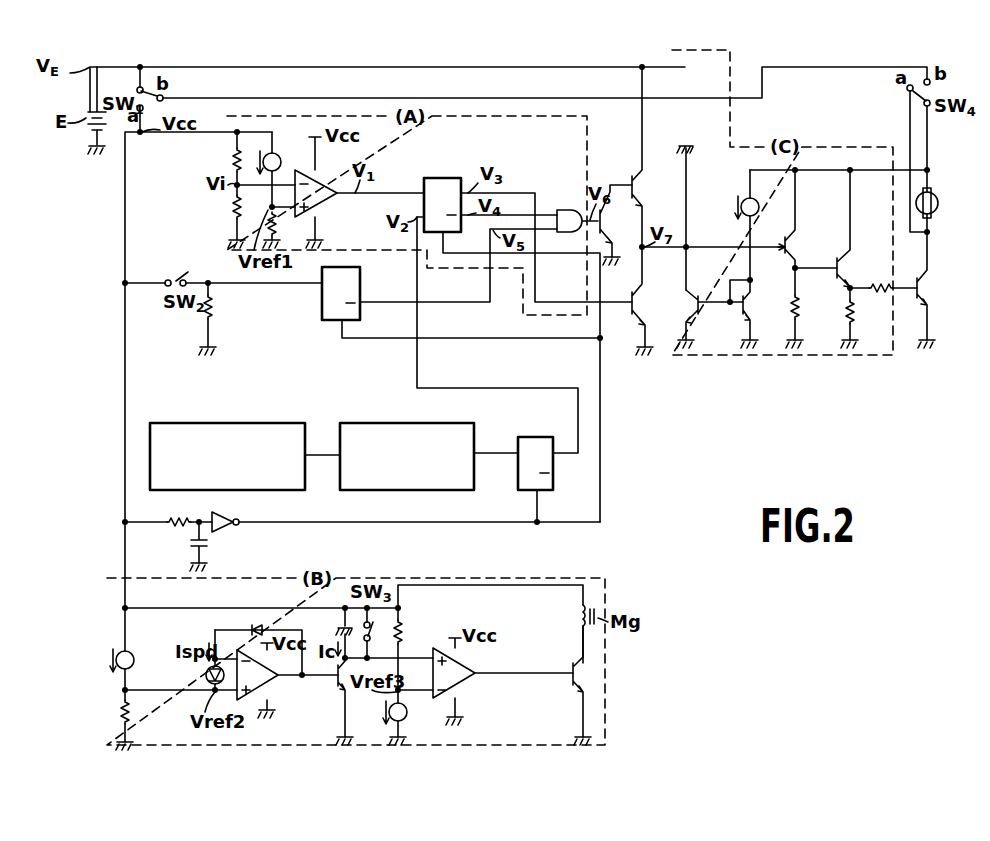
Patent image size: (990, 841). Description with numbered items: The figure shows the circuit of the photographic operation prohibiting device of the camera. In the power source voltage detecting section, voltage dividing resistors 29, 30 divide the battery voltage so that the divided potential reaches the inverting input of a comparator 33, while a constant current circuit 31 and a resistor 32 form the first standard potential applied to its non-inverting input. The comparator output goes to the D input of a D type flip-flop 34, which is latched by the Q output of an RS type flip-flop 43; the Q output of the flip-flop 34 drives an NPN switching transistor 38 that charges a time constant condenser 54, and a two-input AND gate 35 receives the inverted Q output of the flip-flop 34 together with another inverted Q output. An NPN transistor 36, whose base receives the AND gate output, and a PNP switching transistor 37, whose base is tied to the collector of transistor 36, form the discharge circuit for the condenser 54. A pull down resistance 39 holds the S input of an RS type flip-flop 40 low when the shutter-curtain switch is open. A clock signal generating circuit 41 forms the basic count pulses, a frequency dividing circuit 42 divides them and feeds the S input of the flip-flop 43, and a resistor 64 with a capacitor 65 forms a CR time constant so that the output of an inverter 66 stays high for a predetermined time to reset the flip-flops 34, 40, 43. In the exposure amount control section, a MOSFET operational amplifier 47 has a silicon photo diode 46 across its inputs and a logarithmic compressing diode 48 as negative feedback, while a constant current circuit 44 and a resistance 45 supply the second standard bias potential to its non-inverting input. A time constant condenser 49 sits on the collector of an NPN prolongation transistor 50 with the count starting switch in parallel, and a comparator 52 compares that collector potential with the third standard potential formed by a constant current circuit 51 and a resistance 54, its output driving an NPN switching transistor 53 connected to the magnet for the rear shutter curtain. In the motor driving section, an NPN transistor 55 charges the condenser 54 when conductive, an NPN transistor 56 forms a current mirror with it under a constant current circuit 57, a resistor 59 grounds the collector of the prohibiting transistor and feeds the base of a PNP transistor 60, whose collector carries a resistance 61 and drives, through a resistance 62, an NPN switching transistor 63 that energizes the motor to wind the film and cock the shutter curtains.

The voltage dividing resistor 29 is at (235, 165).
The voltage dividing resistor 30 is at (234, 213).
The constant current circuit 31 is at (280, 158).
The resistor 32 is at (276, 226).
The comparator 33 is at (330, 206).
The D type flip-flop 34 is at (440, 178).
The 2-input AND gate 35 is at (566, 210).
The NPN type transistor 36 is at (608, 225).
The PNP type switching transistor 37 is at (633, 178).
The NPN type switching transistor 38 is at (633, 314).
The pull down resistance 39 is at (214, 312).
The RS type flip-flop 40 is at (322, 292).
The clock signal generating circuit 41 is at (240, 423).
The frequency dividing circuit 42 is at (390, 423).
The RS type flip-flop 43 is at (531, 437).
The constant current circuit 44 is at (133, 652).
The resistance 45 is at (130, 710).
The silicon photo diode 46 is at (206, 675).
The MOSFET operational amplifier 47 is at (262, 698).
The logarithmic compressing diode 48 is at (257, 624).
The time constant condenser 49 is at (338, 632).
The NPN prolongation transistor 50 is at (336, 683).
The constant current circuit 51 is at (407, 714).
The comparator 52 is at (460, 690).
The NPN type switching transistor 53 is at (570, 688).
The time constant condenser 54 is at (402, 626).
The NPN transistor 55 is at (697, 297).
The NPN type transistor 56 is at (749, 304).
The constant current circuit 57 is at (759, 202).
The resistor 59 is at (800, 306).
The PNP type transistor 60 is at (847, 268).
The resistance 61 is at (847, 316).
The resistance 62 is at (881, 292).
The NPN type switching transistor 63 is at (926, 281).
The resistor 64 is at (178, 518).
The capacitor 65 is at (207, 544).
The inverter 66 is at (224, 517).